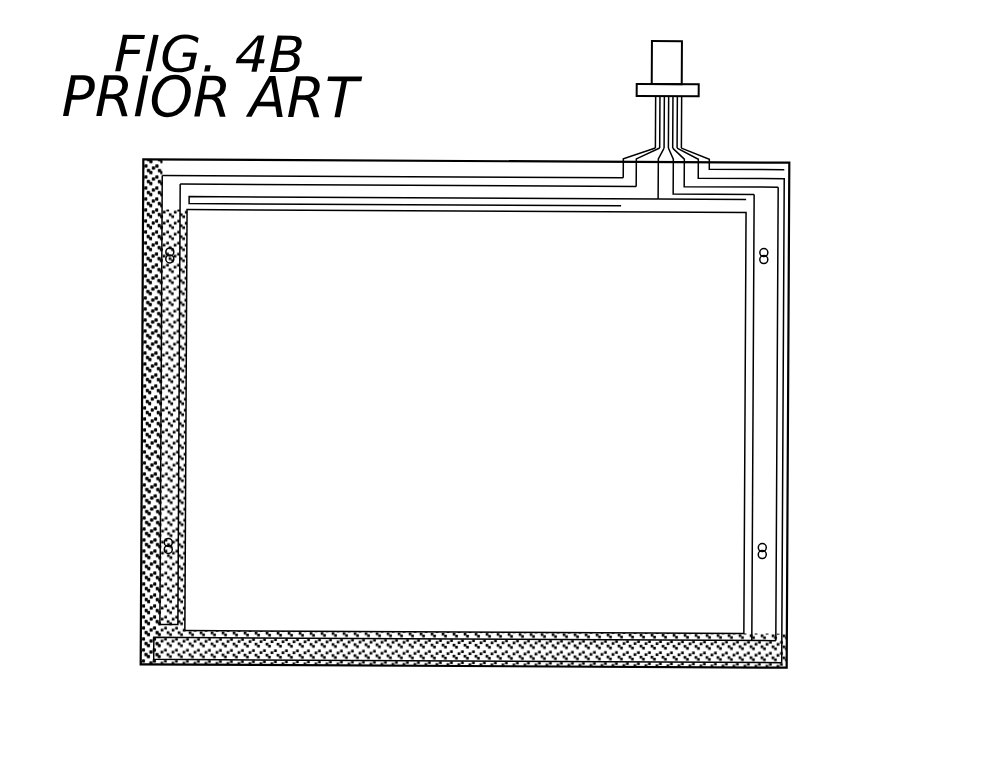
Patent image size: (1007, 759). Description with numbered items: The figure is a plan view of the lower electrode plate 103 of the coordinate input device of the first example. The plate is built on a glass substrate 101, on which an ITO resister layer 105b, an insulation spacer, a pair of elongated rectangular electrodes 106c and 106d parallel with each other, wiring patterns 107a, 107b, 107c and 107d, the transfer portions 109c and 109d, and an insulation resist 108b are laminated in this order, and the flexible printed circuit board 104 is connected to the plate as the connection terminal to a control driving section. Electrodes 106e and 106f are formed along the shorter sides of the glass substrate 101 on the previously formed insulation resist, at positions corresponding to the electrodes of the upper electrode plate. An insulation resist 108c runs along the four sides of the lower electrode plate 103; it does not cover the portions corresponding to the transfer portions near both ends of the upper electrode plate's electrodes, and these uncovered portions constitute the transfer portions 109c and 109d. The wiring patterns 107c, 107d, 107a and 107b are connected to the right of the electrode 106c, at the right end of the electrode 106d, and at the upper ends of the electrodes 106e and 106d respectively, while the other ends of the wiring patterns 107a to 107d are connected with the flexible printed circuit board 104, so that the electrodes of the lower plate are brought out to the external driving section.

The glass substrate 101 is at (790, 598).
The lower electrode plate 103 is at (546, 140).
The flexible printed circuit board 104 is at (673, 66).
The ITO resister layer 105b is at (715, 410).
The elongated rectangular electrode 106c is at (386, 200).
The elongated rectangular electrode 106d is at (730, 657).
The electrode 106e is at (765, 343).
The electrode 106f is at (168, 320).
The wiring pattern 107a is at (680, 162).
The wiring pattern 107b is at (437, 182).
The wiring pattern 107c is at (648, 160).
The wiring pattern 107d is at (790, 182).
The insulation resist 108b is at (150, 400).
The insulation resist 108c is at (750, 636).
The transfer portion 109c is at (767, 257).
The transfer portion 109d is at (165, 256).